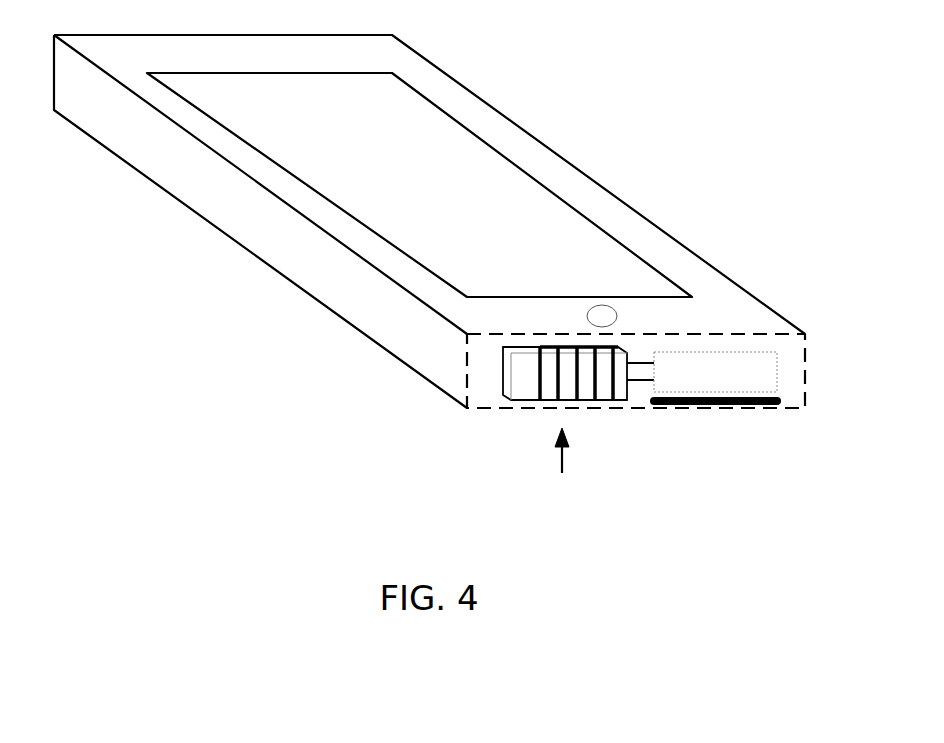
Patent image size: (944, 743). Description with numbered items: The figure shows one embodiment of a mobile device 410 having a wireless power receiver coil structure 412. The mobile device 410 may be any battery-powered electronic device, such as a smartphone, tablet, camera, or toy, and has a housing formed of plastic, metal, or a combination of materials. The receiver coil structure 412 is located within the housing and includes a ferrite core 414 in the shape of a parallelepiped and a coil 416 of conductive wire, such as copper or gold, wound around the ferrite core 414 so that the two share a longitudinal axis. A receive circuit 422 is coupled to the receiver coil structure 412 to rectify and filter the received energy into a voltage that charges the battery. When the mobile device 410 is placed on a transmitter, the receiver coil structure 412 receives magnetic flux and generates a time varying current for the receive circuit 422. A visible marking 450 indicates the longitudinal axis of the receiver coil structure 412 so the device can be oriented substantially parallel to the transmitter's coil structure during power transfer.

The mobile device 410 is at (588, 178).
The receiver coil structure 412 is at (565, 468).
The ferrite core 414 is at (528, 400).
The coil 416 is at (619, 389).
The receive circuit 422 is at (777, 370).
The visible marking 450 is at (750, 405).